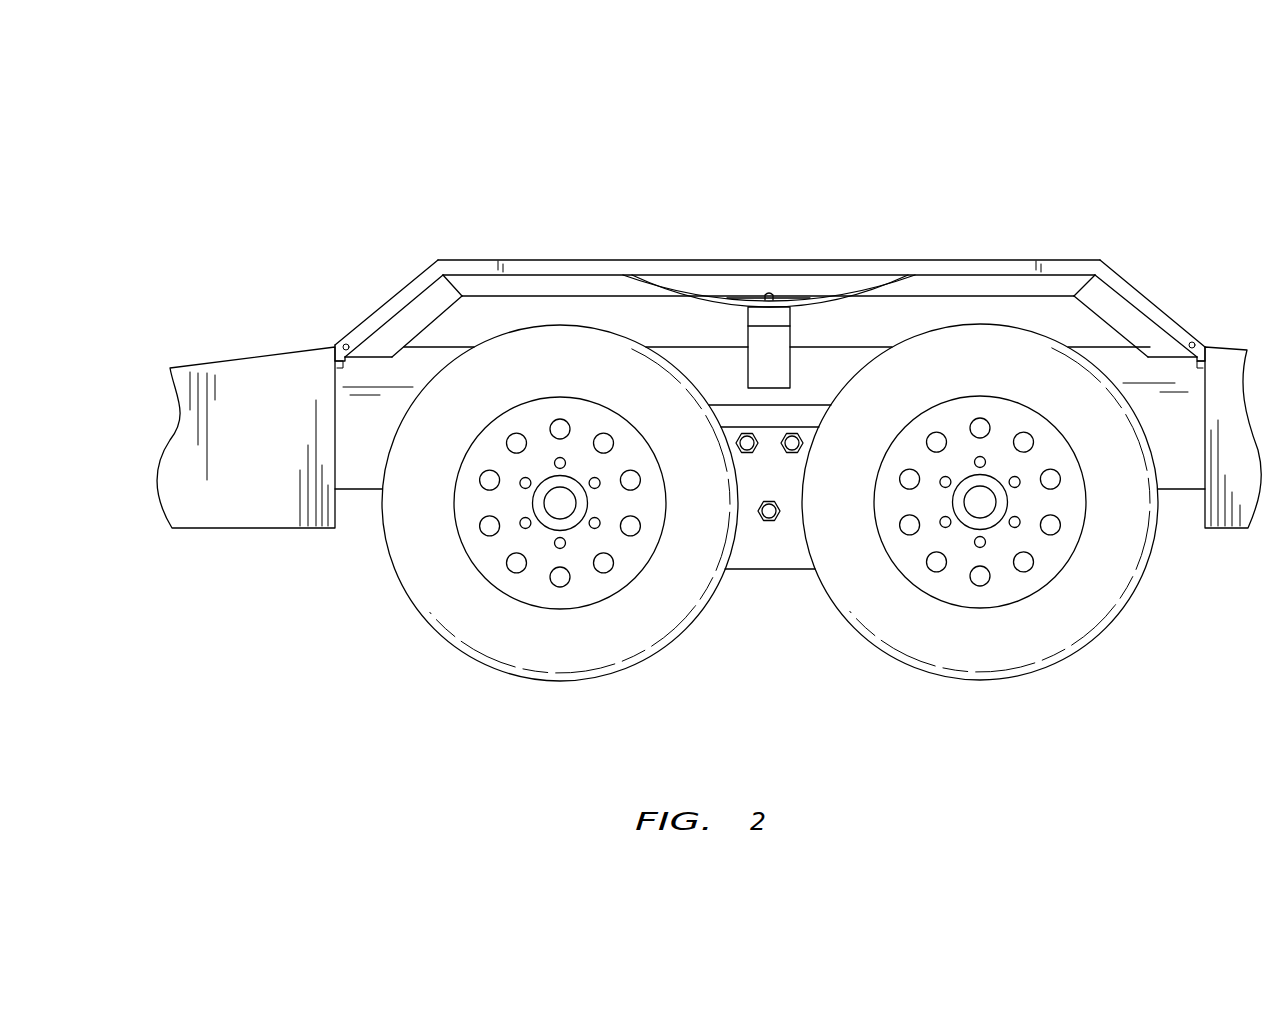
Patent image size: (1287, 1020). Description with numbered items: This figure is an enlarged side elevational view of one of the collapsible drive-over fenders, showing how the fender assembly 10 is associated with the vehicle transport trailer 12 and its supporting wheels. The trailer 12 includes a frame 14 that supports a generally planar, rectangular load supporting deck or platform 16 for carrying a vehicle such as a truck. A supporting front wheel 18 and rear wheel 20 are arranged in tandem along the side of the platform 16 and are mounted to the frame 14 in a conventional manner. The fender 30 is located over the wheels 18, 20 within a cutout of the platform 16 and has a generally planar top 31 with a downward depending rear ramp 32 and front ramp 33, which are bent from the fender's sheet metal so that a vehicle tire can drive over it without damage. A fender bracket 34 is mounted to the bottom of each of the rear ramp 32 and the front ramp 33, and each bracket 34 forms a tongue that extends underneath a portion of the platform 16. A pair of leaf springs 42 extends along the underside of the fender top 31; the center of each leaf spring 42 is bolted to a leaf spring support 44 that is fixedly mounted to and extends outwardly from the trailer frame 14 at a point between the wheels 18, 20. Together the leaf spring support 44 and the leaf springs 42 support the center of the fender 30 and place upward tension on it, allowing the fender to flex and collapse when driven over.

The fender assembly 10 is at (1000, 256).
The vehicle transport trailer 12 is at (782, 157).
The frame 14 is at (701, 385).
The load supporting deck or platform 16 is at (1098, 342).
The front wheel 18 is at (1008, 587).
The rear wheel 20 is at (537, 585).
The fender 30 is at (477, 270).
The fender top 31 is at (885, 258).
The rear ramp 32 is at (386, 298).
The front ramp 33 is at (1117, 268).
The fender bracket 34 is at (336, 378).
The leaf springs 42 is at (688, 292).
The leaf spring support 44 is at (777, 347).